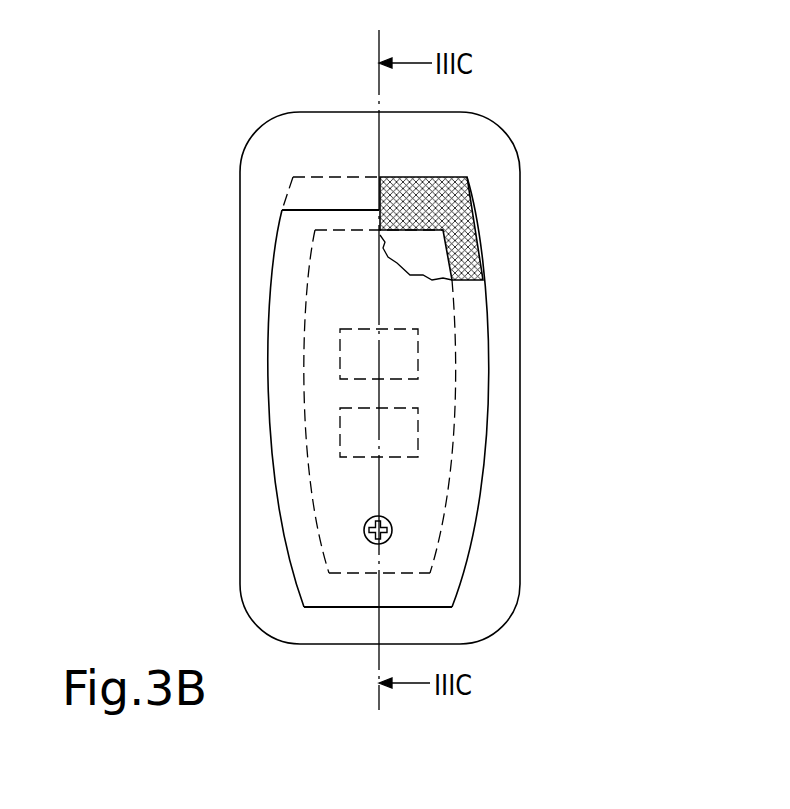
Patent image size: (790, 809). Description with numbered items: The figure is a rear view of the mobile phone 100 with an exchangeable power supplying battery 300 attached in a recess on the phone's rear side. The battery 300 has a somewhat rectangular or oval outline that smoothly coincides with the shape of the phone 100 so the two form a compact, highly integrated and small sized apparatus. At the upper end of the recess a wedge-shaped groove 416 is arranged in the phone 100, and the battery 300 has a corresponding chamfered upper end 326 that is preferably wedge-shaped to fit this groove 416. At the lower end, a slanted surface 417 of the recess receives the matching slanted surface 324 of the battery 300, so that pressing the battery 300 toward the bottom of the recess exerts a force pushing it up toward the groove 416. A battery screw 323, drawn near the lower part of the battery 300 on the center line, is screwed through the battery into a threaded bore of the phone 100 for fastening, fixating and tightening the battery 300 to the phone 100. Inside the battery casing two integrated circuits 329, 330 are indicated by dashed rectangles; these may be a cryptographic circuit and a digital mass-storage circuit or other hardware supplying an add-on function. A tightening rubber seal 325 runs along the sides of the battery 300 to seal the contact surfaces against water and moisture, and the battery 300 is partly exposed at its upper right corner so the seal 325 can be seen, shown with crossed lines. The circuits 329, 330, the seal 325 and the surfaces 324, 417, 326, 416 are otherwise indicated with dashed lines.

The mobile phone 100 is at (563, 148).
The battery 300 is at (486, 364).
The tightening rubber seal 325 is at (472, 232).
The wedge-shaped groove 416 is at (253, 171).
The chamfered upper end 326 is at (317, 197).
The slanted surface 417 is at (362, 645).
The slanted surface 324 is at (347, 594).
The integrated circuit 329 is at (353, 350).
The integrated circuit 330 is at (358, 433).
The battery screw 323 is at (388, 519).